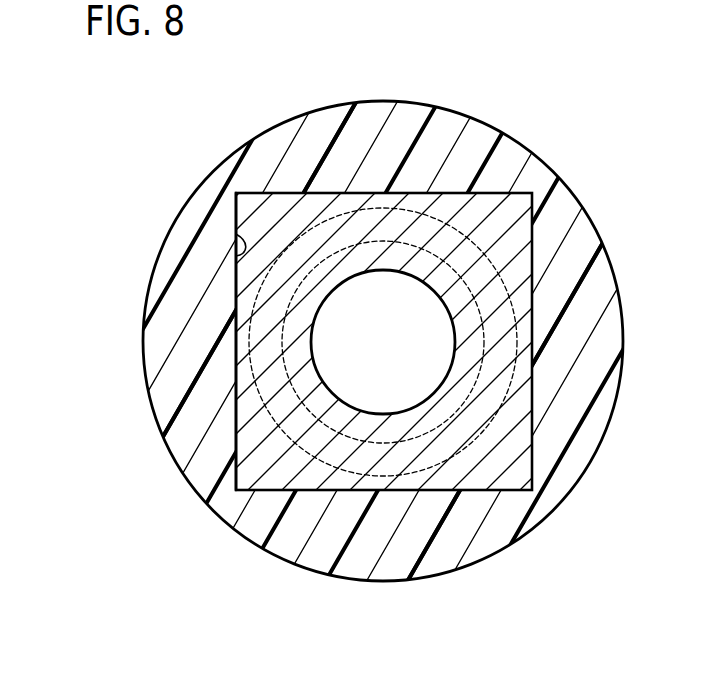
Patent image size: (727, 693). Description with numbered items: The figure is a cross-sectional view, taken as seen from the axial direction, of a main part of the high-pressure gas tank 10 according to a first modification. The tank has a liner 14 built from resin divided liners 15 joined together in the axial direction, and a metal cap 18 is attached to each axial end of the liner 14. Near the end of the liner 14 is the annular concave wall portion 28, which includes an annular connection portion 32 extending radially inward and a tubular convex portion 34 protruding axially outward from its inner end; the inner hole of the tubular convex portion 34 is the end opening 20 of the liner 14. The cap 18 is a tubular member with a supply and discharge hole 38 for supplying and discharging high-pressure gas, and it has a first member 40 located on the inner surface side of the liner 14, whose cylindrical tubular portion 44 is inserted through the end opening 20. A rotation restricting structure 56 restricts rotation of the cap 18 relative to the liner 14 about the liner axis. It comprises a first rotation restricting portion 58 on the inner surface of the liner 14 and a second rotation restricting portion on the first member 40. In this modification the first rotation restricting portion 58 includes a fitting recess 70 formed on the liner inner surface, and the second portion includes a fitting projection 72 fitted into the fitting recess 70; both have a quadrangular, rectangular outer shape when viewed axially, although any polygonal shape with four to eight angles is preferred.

The high-pressure gas tank 10 is at (641, 46).
The liner 14 is at (523, 146).
The divided liner 15 is at (363, 340).
The cap 18 is at (403, 491).
The end opening 20 is at (280, 385).
The annular concave wall portion 28 is at (593, 287).
The annular connection portion 32 is at (183, 443).
The tubular convex portion 34 is at (330, 462).
The supply and discharge hole 38 is at (423, 373).
The first member 40 is at (363, 418).
The cylindrical tubular portion 44 is at (496, 439).
The rotation restricting structure 56 is at (50, 197).
The first rotation restricting portion 58 is at (236, 234).
The fitting recess 70 is at (149, 228).
The fitting projection 72 is at (151, 341).